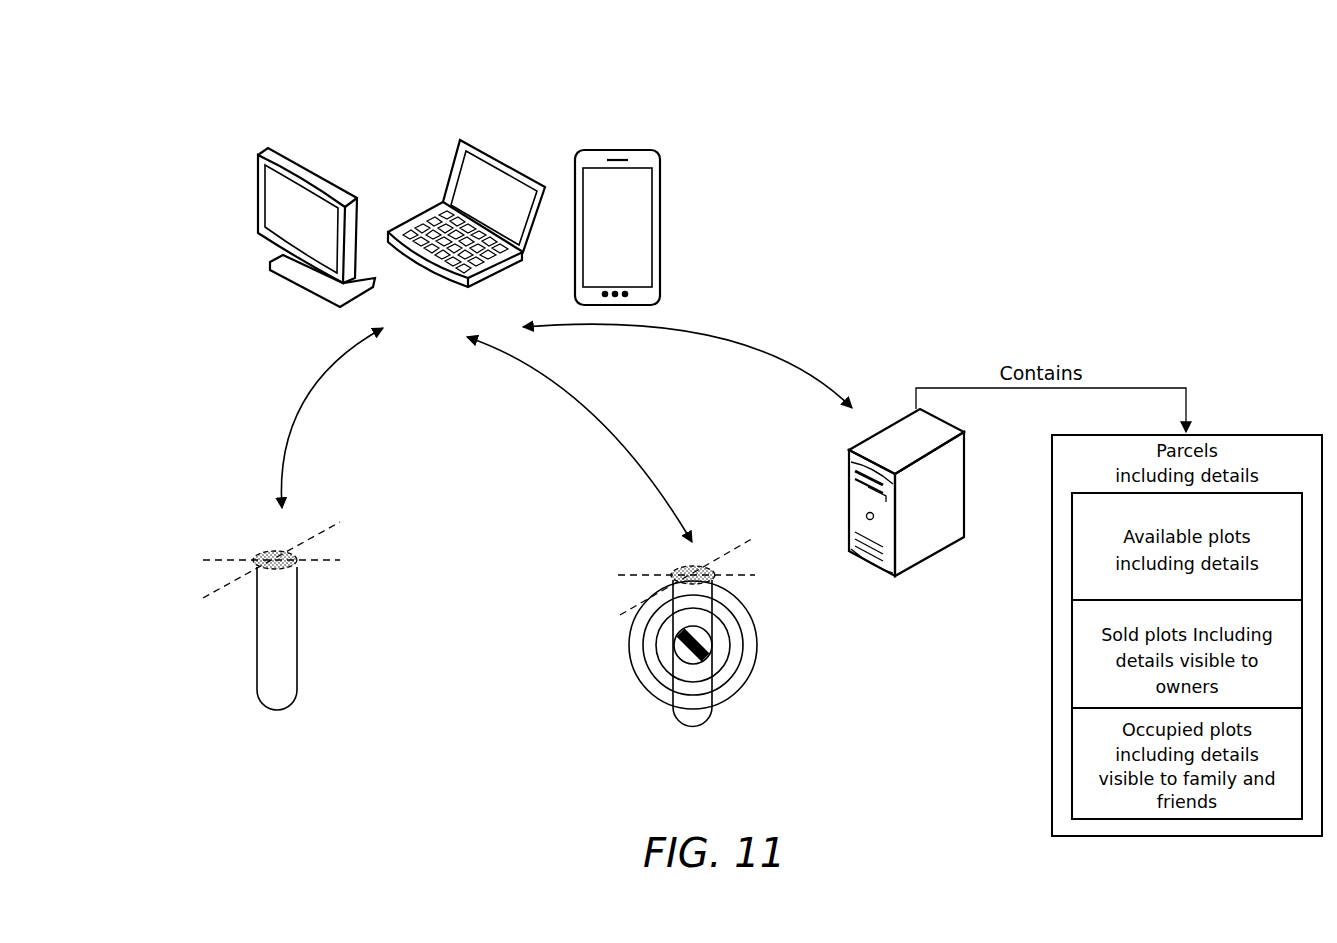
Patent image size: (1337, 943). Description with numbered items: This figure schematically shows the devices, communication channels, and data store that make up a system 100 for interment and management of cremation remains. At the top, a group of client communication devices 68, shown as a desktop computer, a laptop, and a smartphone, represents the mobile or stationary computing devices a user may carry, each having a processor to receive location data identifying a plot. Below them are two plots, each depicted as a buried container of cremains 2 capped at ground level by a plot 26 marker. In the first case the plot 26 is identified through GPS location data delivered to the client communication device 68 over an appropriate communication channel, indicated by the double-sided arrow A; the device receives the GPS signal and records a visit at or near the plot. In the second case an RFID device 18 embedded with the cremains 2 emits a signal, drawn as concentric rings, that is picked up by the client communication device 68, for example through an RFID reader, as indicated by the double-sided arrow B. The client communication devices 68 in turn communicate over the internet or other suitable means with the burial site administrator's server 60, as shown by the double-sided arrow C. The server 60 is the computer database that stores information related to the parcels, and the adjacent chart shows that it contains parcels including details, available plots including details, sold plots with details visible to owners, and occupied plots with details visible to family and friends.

The client communication device 68 is at (665, 142).
The system 100 is at (850, 260).
The cremains 2 is at (282, 692).
The plot 26 is at (297, 556).
The RFID device 18 is at (703, 648).
The server 60 is at (925, 543).
The double-sided arrow A is at (303, 403).
The double-sided arrow B is at (588, 410).
The double-sided arrow C is at (720, 338).